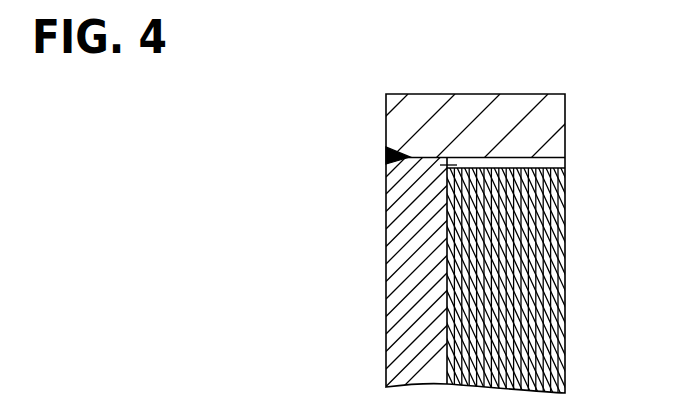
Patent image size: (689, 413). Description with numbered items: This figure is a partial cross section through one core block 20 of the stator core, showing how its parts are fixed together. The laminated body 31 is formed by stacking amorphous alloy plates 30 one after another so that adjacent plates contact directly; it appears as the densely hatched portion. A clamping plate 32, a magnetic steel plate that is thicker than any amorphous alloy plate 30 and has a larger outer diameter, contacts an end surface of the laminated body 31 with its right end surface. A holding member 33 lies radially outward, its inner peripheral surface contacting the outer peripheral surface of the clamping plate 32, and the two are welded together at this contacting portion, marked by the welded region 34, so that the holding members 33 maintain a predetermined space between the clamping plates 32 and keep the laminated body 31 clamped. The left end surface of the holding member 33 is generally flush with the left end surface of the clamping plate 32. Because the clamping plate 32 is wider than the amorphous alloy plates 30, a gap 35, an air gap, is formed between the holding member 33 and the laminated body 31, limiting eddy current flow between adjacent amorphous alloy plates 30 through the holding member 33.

The core block 20 is at (575, 88).
The amorphous alloy plate 30 is at (550, 208).
The laminated body 31 is at (550, 160).
The clamping plate 32 is at (410, 262).
The holding member 33 is at (553, 128).
The corner portion 34 is at (389, 150).
The gap 35 is at (447, 166).